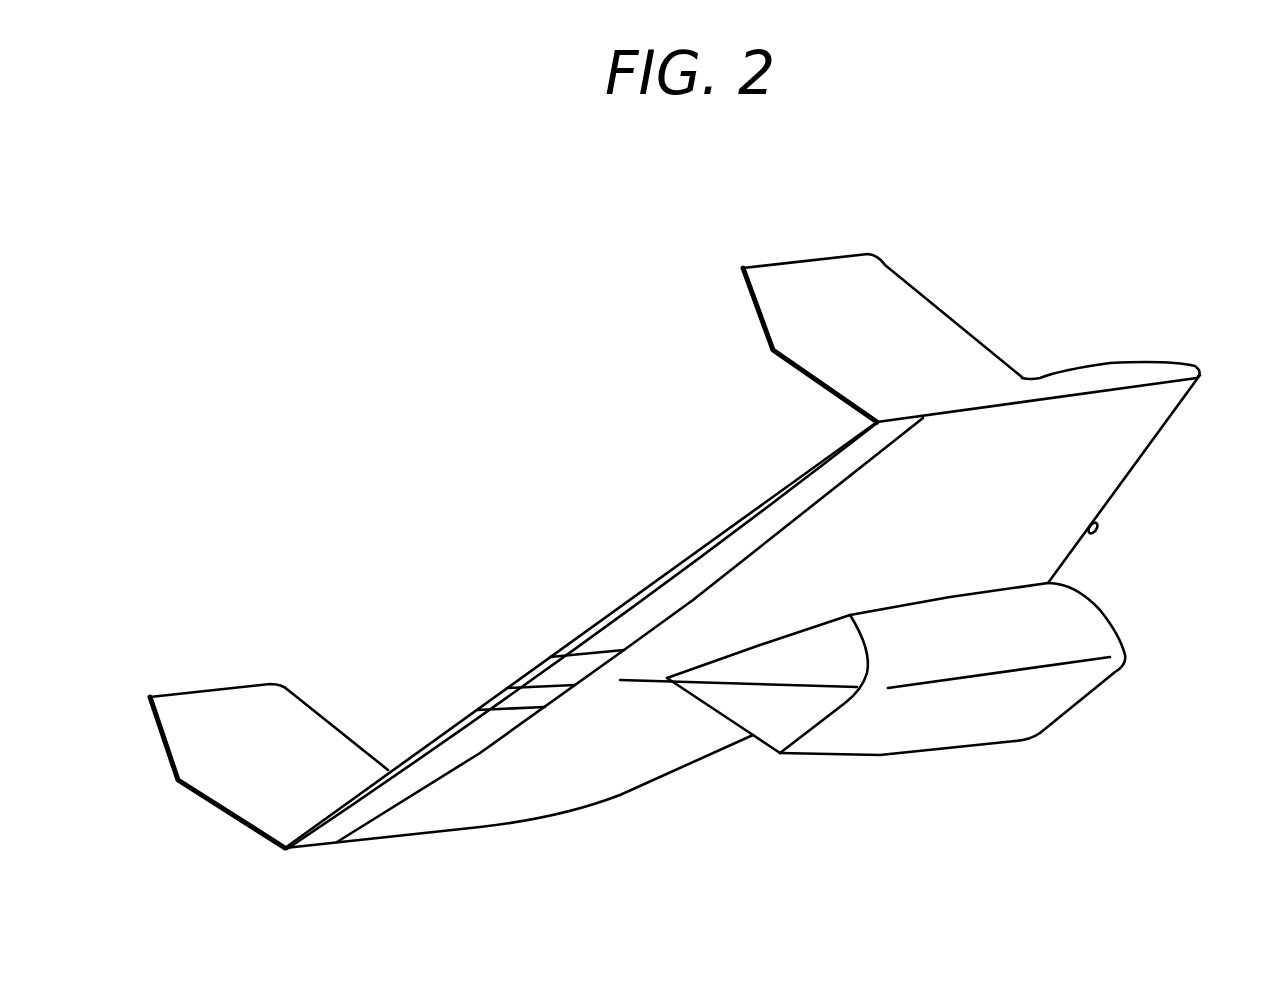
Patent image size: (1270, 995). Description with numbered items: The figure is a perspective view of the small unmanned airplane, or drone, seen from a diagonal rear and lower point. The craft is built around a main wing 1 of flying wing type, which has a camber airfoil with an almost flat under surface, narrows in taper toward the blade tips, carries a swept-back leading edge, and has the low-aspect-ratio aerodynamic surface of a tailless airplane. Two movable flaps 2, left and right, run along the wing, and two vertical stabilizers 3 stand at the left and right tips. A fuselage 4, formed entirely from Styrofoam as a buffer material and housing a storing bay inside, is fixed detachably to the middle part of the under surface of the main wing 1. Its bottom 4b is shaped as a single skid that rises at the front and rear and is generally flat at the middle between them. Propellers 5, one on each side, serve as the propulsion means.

The main wing 1 is at (1148, 445).
The movable flap 2 is at (437, 743).
The vertical stabilizer 3 is at (238, 723).
The fuselage 4 is at (886, 726).
The bottom of the fuselage 4b is at (953, 722).
The propeller 5 is at (1099, 528).